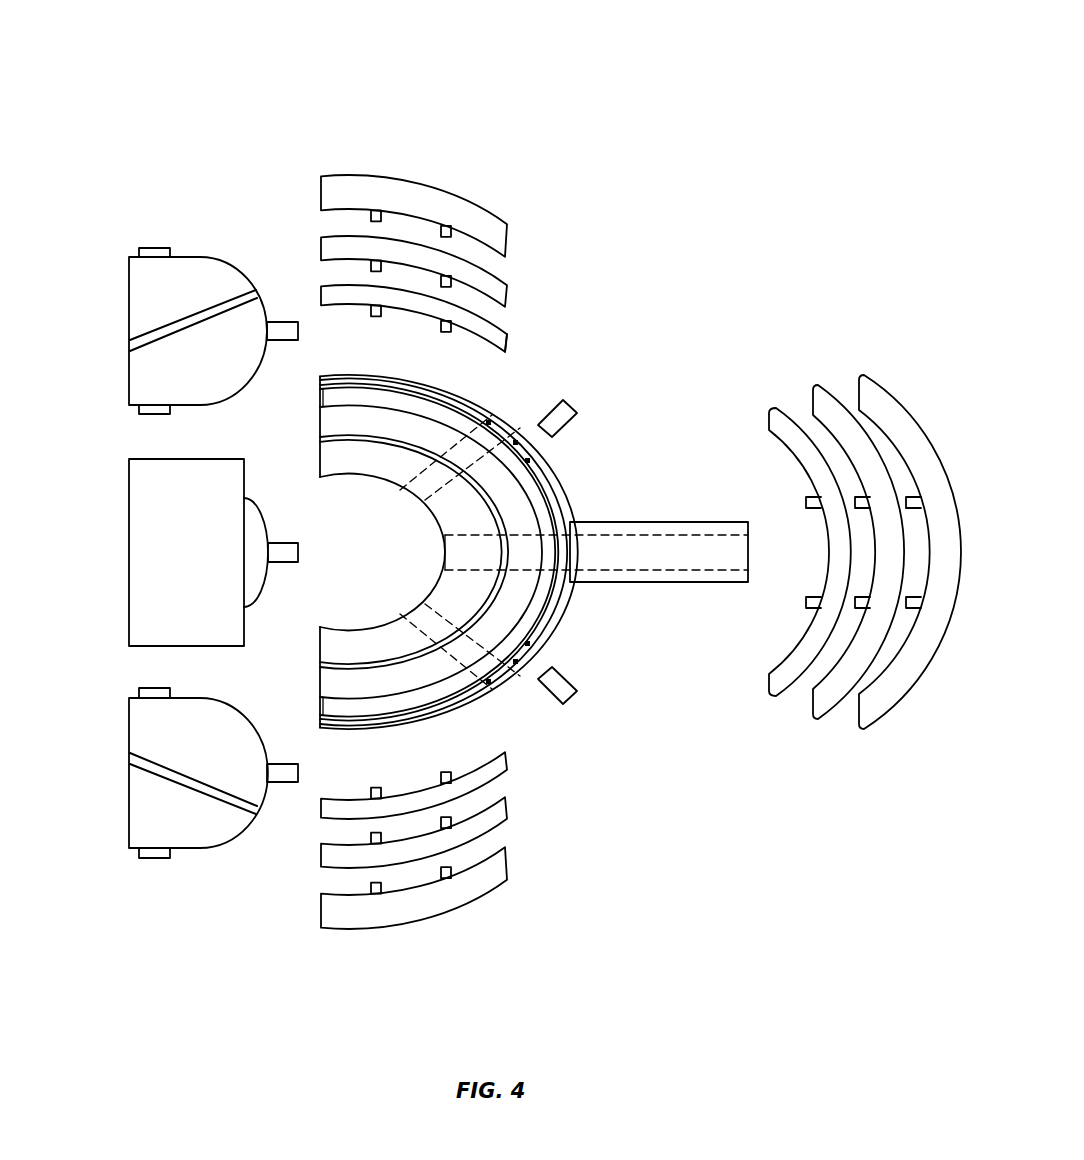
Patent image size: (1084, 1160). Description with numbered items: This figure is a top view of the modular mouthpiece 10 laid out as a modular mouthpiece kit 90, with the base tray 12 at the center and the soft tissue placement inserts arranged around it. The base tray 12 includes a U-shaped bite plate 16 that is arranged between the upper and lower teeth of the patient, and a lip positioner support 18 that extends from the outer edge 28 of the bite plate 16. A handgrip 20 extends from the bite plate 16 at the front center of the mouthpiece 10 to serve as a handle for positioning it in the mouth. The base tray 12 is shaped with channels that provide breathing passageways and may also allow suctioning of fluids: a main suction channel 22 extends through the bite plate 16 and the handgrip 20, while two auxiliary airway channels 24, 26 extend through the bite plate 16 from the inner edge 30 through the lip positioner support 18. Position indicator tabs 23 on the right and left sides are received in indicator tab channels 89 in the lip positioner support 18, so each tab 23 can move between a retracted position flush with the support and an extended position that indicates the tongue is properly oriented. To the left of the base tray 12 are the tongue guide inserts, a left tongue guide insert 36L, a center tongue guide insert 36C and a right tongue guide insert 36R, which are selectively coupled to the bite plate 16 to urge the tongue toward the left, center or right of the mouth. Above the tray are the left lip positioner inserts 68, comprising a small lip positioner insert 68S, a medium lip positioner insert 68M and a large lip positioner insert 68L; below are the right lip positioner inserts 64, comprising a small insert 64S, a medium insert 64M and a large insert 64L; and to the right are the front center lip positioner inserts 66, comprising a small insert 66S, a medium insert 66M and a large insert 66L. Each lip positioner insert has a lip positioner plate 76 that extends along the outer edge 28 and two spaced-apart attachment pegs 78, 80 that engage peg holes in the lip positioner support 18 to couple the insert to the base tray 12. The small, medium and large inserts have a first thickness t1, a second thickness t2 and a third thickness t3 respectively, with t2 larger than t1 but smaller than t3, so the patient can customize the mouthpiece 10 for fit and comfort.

The modular mouthpiece 10 is at (230, 86).
The base tray 12 is at (540, 382).
The U-shaped bite plate 16 is at (302, 442).
The lip positioner support 18 is at (503, 415).
The handgrip 20 is at (695, 512).
The main suction channel 22 is at (760, 548).
The position indicator tab 23 is at (578, 413).
The auxiliary airway channel 24 is at (400, 603).
The auxiliary airway channel 26 is at (405, 490).
The outer edge 28 is at (352, 395).
The inner edge 30 is at (430, 520).
The left tongue guide insert 36L is at (108, 328).
The center tongue guide insert 36C is at (108, 558).
The right tongue guide insert 36R is at (108, 787).
The right lip positioner inserts 64 is at (353, 902).
The small lip positioner insert 64S is at (317, 818).
The medium lip positioner insert 64M is at (318, 870).
The large lip positioner insert 64L is at (320, 928).
The front center lip positioner inserts 66 is at (846, 486).
The small lip positioner insert 66S is at (768, 406).
The medium lip positioner insert 66M is at (816, 383).
The large lip positioner insert 66L is at (873, 372).
The left lip positioner inserts 68 is at (403, 231).
The large lip positioner insert 68L is at (315, 160).
The medium lip positioner insert 68M is at (316, 230).
The small lip positioner insert 68S is at (406, 317).
The lip positioner plate 76 is at (514, 327).
The attachment peg 78 is at (452, 346).
The attachment peg 80 is at (371, 340).
The indicator tab channel 89 is at (536, 448).
The modular mouthpiece kit 90 is at (686, 172).
The first thickness t1 is at (508, 751).
The second thickness t2 is at (508, 796).
The third thickness t3 is at (508, 846).